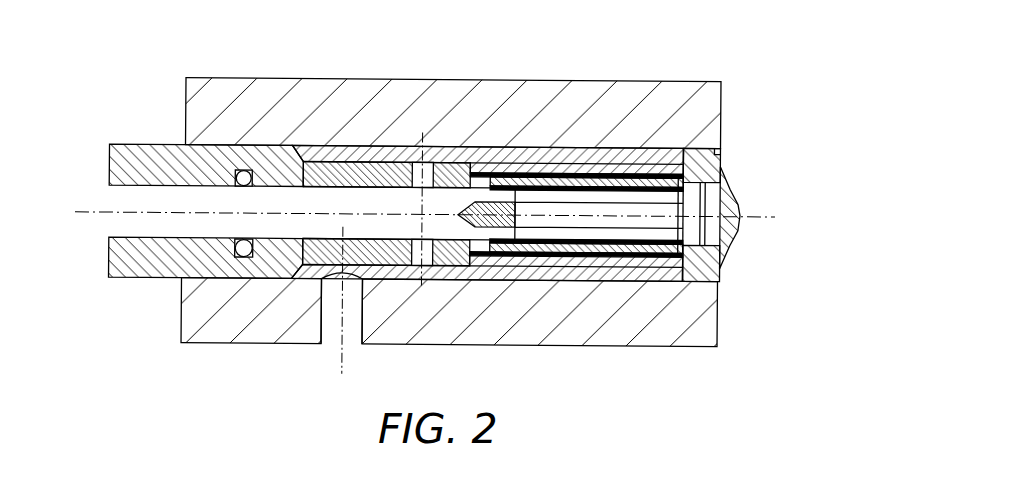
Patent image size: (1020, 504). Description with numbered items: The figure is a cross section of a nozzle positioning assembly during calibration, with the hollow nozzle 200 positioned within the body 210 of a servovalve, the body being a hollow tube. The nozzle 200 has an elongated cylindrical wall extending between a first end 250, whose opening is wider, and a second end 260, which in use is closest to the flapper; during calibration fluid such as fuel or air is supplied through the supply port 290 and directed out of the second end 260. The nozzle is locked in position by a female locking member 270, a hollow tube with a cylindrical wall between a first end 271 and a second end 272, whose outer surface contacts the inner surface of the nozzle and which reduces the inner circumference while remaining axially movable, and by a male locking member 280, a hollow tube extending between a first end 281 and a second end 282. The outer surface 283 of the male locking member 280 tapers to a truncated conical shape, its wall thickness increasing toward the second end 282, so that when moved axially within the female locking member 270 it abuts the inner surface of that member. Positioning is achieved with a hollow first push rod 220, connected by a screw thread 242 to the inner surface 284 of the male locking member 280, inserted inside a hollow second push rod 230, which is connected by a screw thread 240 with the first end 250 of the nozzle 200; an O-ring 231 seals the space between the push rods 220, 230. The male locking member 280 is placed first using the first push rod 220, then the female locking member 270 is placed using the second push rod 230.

The nozzle 200 is at (637, 148).
The body 210 is at (210, 77).
The first push rod 220 is at (450, 281).
The second push rod 230 is at (132, 279).
The O-ring 231 is at (243, 169).
The screw thread 240 is at (498, 160).
The screw thread 242 is at (613, 281).
The first end 250 is at (450, 160).
The second end 260 is at (741, 190).
The female locking member 270 is at (600, 148).
The first end 271 is at (532, 148).
The second end 272 is at (678, 148).
The male locking member 280 is at (693, 148).
The first end 281 is at (555, 148).
The second end 282 is at (724, 143).
The outer surface 283 is at (552, 281).
The inner surface 284 is at (680, 281).
The supply port 290 is at (330, 339).